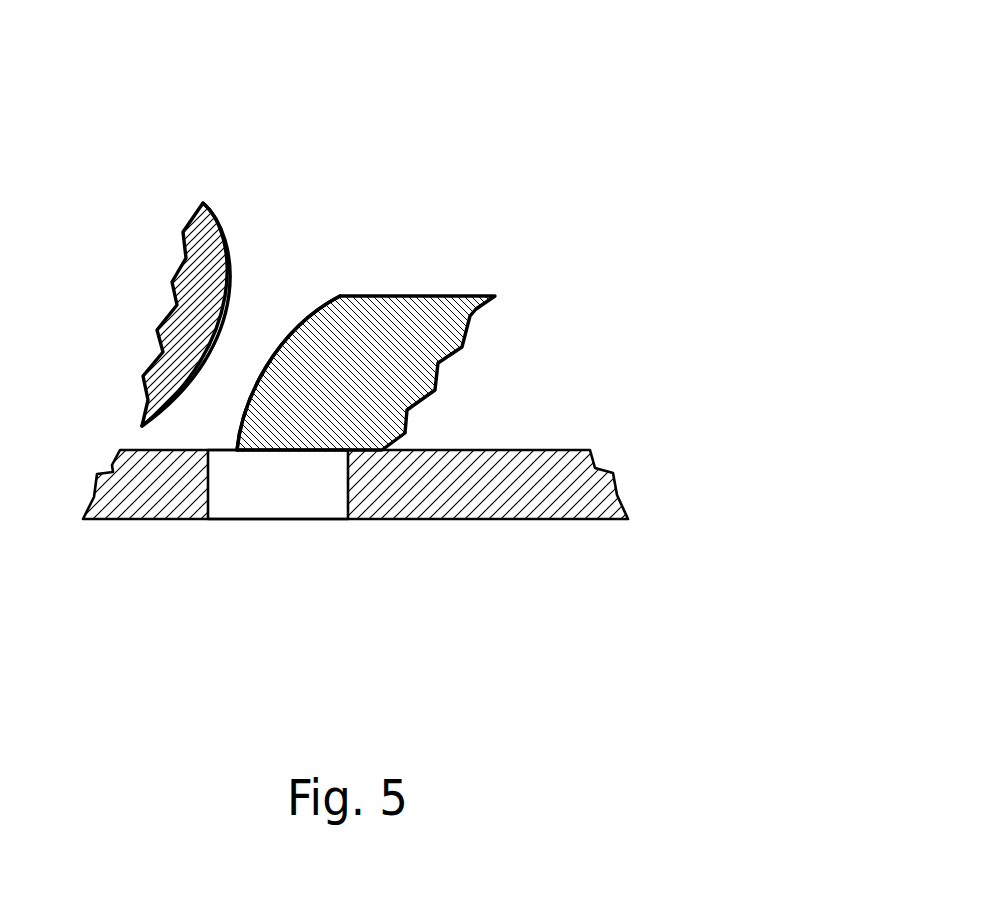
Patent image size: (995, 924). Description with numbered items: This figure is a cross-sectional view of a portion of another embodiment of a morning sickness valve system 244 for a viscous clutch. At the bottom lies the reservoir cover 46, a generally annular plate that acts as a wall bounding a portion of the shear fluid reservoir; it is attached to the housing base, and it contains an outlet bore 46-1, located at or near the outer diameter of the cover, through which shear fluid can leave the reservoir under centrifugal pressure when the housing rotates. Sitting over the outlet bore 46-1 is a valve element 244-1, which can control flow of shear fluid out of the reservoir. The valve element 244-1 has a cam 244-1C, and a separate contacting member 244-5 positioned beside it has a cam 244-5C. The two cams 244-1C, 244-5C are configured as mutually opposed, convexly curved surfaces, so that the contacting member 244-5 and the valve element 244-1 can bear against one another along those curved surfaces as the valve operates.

The morning sickness valve system 244 is at (535, 140).
The contacting member 244-5 is at (202, 237).
The cam 244-5C is at (227, 250).
The valve element 244-1 is at (375, 340).
The cam 244-1C is at (250, 388).
The reservoir cover 46 is at (488, 490).
The outlet bore 46-1 is at (293, 495).